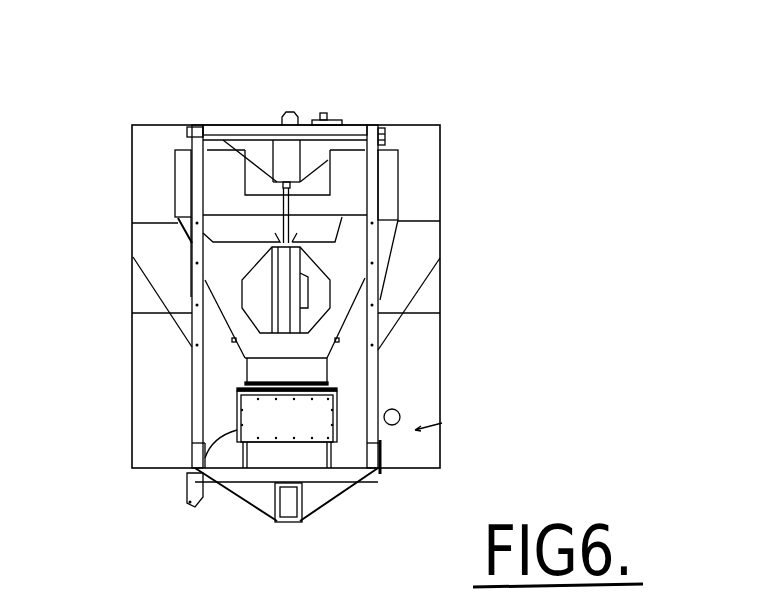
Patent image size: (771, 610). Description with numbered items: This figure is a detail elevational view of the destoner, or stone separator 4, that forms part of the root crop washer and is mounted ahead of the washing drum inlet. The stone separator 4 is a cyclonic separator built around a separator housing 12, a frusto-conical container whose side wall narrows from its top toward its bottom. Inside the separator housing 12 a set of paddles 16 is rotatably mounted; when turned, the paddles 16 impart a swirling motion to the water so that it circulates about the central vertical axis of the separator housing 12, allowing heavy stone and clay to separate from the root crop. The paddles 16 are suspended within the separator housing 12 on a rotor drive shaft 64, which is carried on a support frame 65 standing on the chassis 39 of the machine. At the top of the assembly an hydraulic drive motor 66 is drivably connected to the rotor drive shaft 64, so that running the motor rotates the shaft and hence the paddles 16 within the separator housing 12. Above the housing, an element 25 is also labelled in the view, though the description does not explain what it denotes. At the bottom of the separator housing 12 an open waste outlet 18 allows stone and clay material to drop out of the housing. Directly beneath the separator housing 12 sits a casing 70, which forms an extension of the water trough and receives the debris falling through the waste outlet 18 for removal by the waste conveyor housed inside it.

The stone separator 4 is at (400, 187).
The separator housing 12 is at (356, 297).
The paddles 16 is at (328, 283).
The waste outlet 18 is at (305, 364).
The feed funnel 25 is at (253, 187).
The chassis 39 is at (187, 488).
The rotor drive shaft 64 is at (293, 112).
The support frame 65 is at (375, 152).
The hydraulic drive motor 66 is at (340, 117).
The casing 70 is at (305, 413).